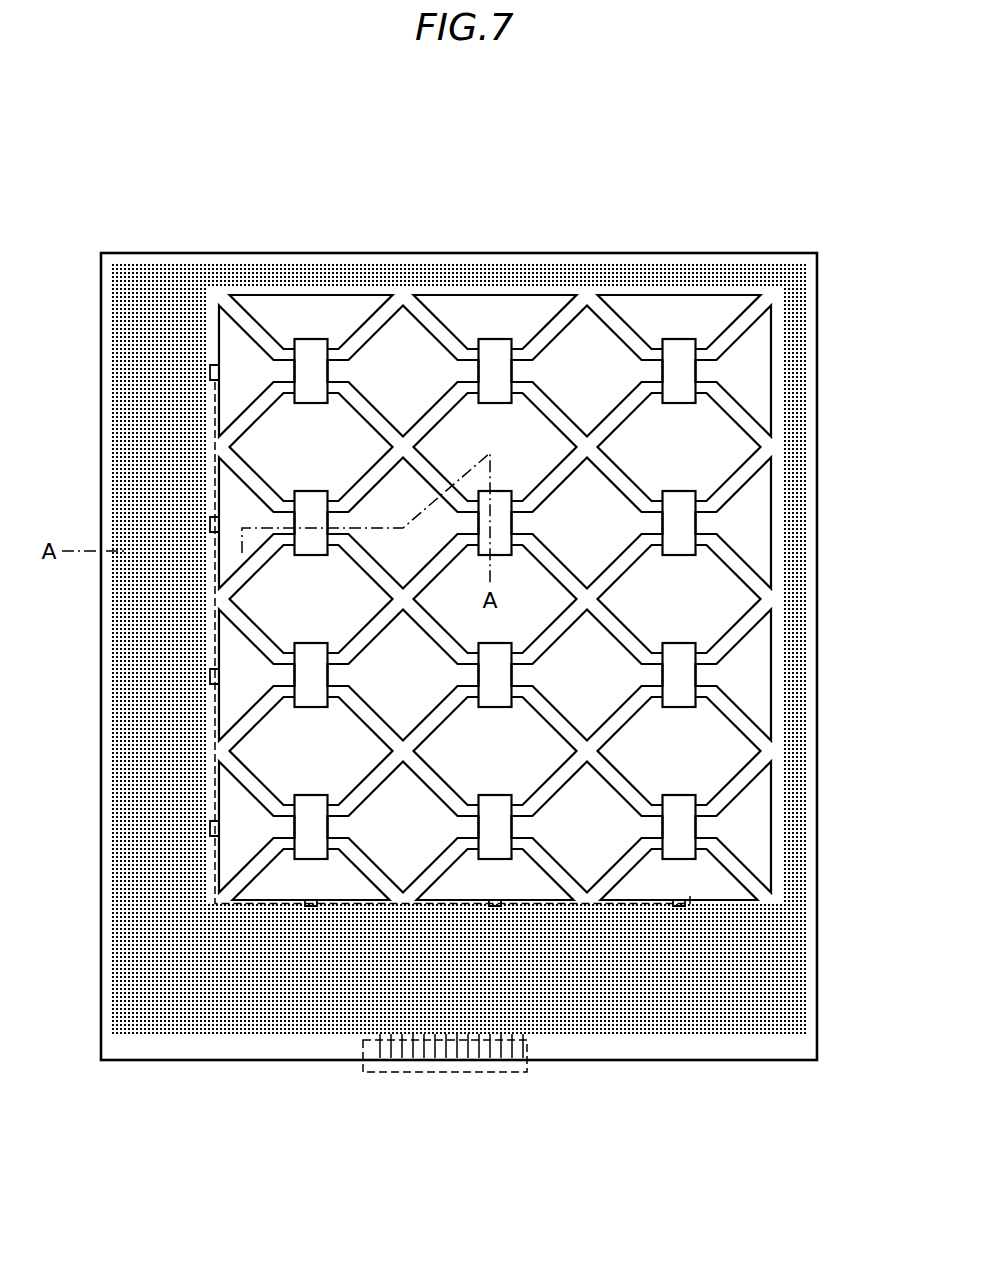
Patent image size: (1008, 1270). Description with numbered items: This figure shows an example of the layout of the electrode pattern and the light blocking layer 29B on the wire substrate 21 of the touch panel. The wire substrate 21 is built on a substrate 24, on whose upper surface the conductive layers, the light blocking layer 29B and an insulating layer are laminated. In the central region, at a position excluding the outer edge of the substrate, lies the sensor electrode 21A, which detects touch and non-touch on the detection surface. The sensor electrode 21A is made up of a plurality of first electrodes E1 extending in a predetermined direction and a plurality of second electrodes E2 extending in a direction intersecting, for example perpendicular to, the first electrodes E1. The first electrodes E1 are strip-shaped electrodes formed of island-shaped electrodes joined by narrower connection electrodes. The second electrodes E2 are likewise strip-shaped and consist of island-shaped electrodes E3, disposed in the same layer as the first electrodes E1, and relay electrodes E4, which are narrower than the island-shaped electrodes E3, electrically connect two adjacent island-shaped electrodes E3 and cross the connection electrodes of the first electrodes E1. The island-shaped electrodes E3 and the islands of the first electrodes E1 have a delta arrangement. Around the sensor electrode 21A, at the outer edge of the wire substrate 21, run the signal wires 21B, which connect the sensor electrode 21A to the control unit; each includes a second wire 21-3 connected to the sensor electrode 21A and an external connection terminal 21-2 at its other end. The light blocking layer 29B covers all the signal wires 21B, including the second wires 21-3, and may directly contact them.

The wire substrate 21 is at (816, 211).
The sensor electrode 21A is at (750, 152).
The signal wires 21B is at (391, 1058).
The external connection terminal 21-2 is at (527, 1060).
The second wire 21-3 is at (590, 897).
The substrate 24 is at (808, 1053).
The light blocking layer 29B is at (128, 707).
The first electrodes E1 is at (735, 367).
The second electrodes E2 is at (254, 196).
The island-shaped electrodes E3 is at (266, 316).
The relay electrodes E4 is at (315, 362).